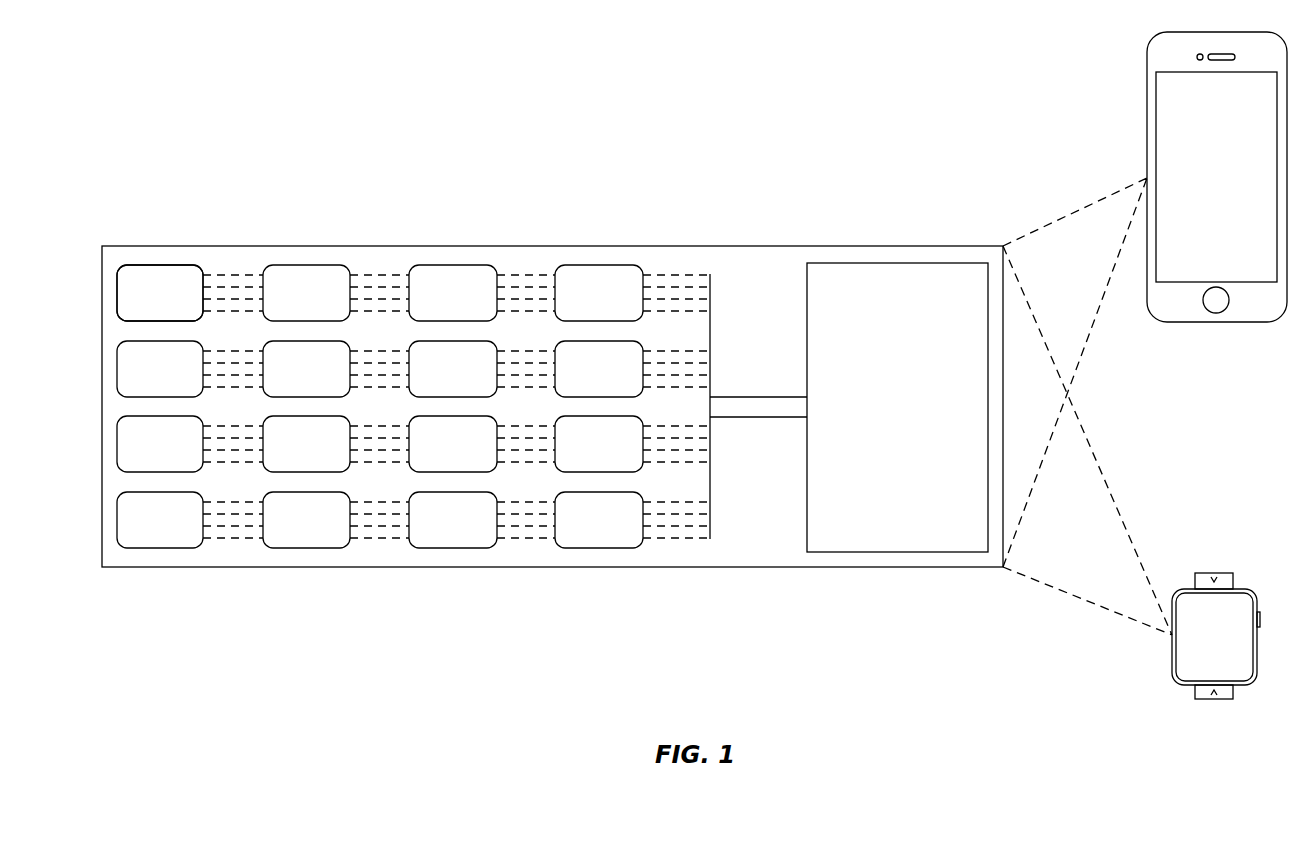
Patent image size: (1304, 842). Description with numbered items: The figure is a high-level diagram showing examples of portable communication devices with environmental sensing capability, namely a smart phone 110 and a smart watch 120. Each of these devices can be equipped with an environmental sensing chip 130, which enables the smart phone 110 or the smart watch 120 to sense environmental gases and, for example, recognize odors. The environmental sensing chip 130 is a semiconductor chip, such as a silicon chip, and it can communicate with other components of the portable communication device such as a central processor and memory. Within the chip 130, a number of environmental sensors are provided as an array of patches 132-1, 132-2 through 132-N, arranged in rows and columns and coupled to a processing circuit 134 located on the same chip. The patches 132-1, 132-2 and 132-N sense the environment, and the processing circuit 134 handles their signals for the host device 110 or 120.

The smart phone 110 is at (1147, 57).
The smart watch 120 is at (1172, 668).
The environmental sensing chip 130 is at (552, 370).
The patch 132-1 is at (187, 301).
The patch 132-2 is at (334, 301).
The patch 132-N is at (626, 528).
The processing circuit 134 is at (884, 449).